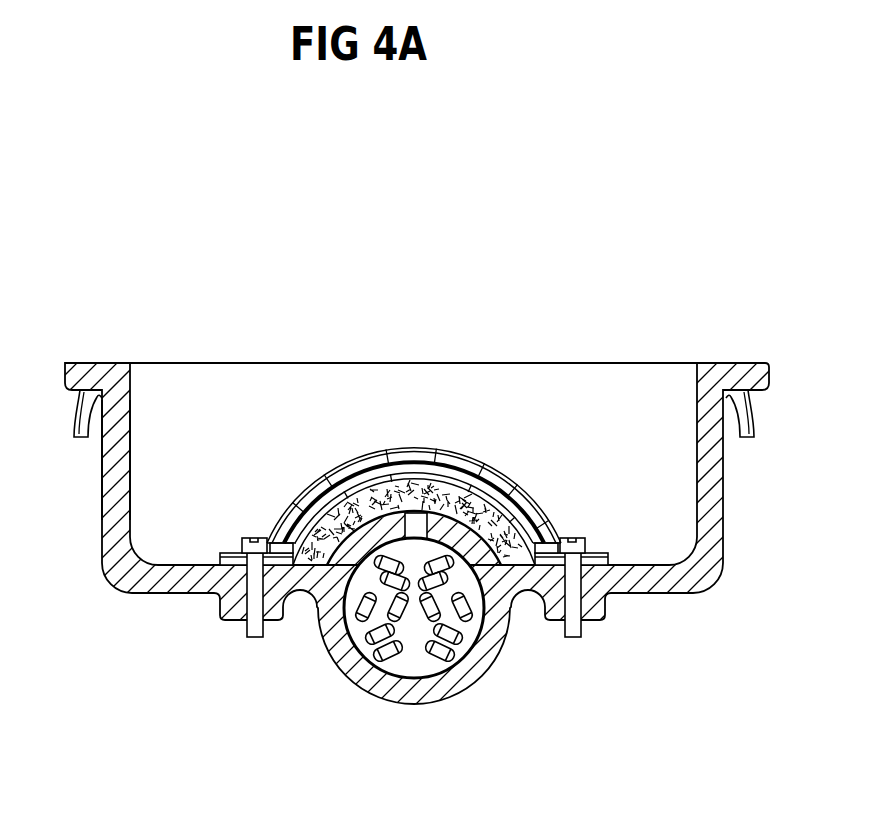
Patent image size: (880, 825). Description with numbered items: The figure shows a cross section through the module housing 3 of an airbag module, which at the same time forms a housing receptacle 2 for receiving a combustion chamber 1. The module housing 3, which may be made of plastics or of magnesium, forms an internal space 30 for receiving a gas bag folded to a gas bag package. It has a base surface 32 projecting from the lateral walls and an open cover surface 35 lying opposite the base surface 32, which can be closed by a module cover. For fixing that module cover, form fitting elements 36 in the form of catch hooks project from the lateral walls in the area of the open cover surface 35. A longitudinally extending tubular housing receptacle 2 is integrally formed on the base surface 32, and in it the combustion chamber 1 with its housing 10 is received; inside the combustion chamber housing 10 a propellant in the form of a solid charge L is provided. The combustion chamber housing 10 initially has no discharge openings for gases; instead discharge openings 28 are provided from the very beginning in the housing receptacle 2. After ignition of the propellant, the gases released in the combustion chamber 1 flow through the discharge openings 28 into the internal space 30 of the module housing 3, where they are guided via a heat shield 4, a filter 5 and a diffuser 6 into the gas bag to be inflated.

The combustion chamber 1 is at (398, 750).
The housing receptacle 2 is at (479, 688).
The module housing 3 is at (725, 517).
The heat shield 4 is at (457, 485).
The filter 5 is at (318, 482).
The diffuser 6 is at (512, 478).
The combustion chamber housing 10 is at (489, 628).
The discharge openings 28 is at (415, 530).
The space 30 is at (129, 457).
The base surface 32 is at (640, 582).
The open cover surface 35 is at (403, 362).
The form fitting elements 36 is at (72, 438).
The solid charge L is at (355, 645).